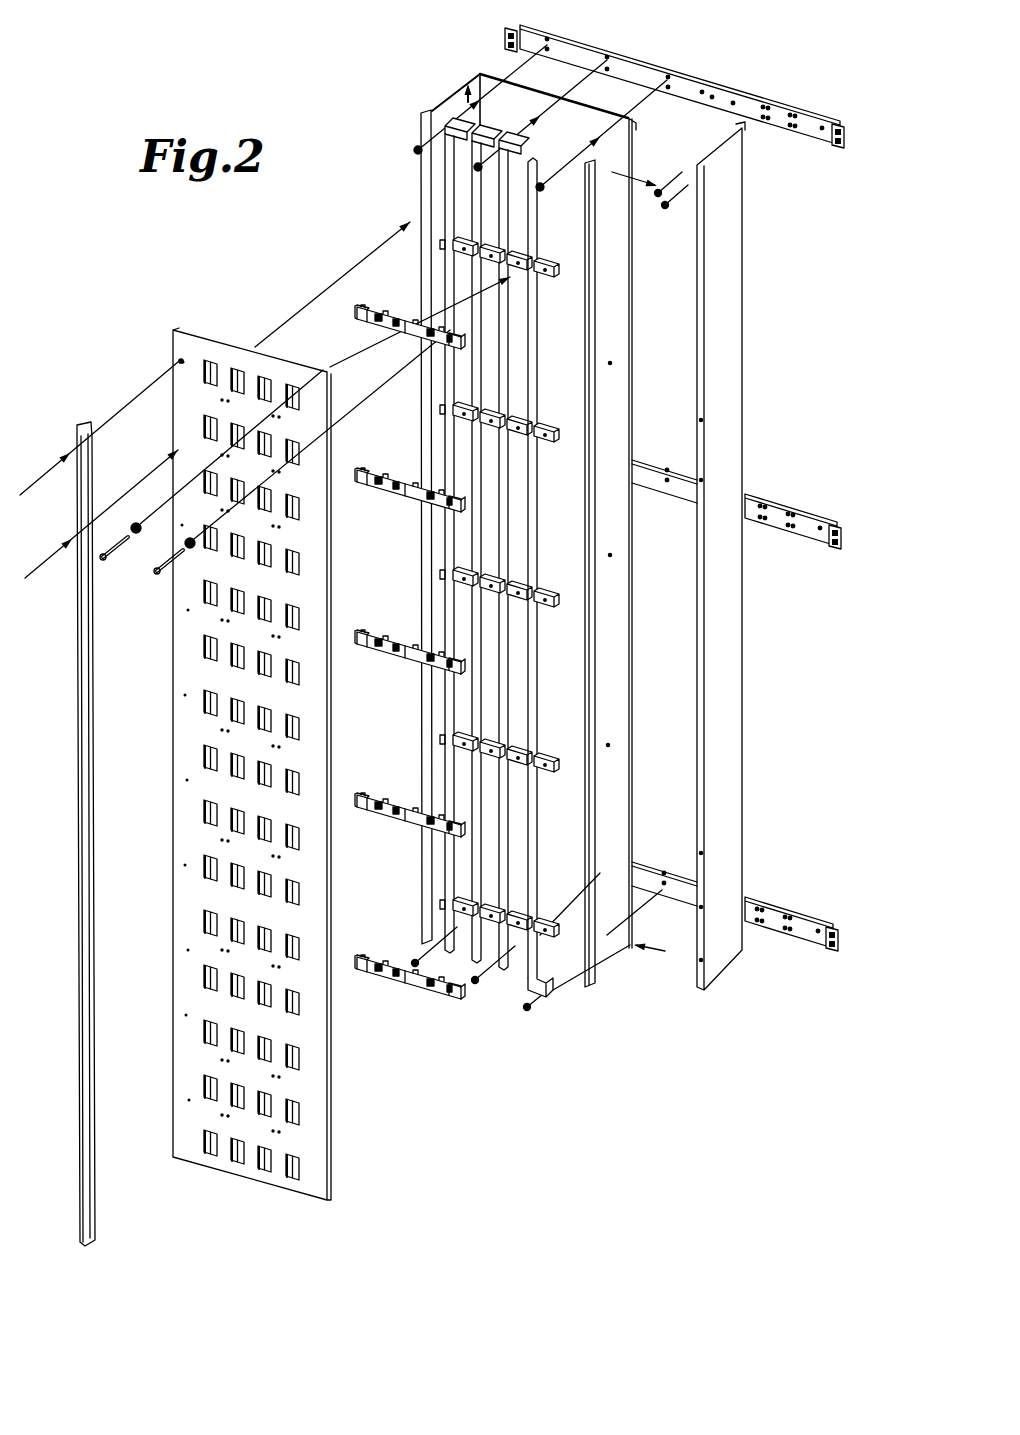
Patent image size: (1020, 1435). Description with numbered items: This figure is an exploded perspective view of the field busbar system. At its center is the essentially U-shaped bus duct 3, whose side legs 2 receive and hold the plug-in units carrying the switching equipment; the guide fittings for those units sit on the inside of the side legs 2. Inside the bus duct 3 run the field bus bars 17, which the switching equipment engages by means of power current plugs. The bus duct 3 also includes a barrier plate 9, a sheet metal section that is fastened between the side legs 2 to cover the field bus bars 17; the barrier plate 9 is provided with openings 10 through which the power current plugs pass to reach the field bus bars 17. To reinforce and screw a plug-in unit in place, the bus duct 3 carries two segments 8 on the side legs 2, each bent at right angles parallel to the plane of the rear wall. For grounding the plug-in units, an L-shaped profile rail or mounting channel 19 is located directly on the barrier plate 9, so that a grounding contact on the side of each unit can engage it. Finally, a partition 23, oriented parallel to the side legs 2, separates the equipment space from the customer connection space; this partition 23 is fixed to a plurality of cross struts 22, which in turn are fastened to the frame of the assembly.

The side legs 2 is at (461, 101).
The bus duct 3 is at (468, 82).
The segments 8 is at (587, 422).
The barrier plate 9 is at (318, 1005).
The openings 10 is at (208, 1138).
The field bus bars 17 is at (530, 366).
The L-shaped profile rail or mounting channel 19 is at (88, 1022).
The cross struts 22 is at (816, 132).
The partition 23 is at (738, 808).